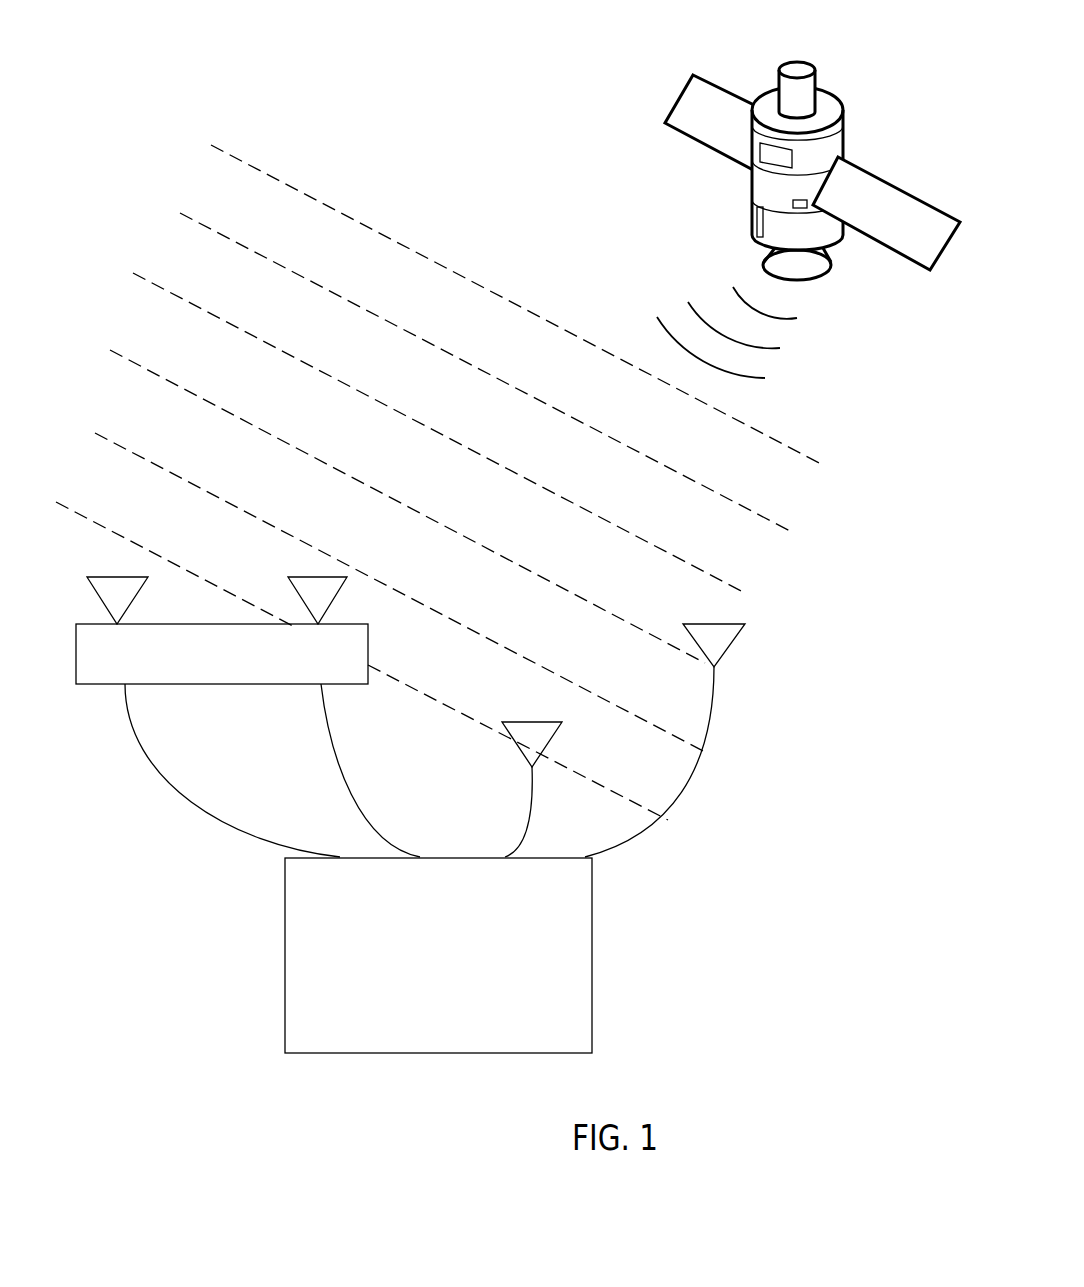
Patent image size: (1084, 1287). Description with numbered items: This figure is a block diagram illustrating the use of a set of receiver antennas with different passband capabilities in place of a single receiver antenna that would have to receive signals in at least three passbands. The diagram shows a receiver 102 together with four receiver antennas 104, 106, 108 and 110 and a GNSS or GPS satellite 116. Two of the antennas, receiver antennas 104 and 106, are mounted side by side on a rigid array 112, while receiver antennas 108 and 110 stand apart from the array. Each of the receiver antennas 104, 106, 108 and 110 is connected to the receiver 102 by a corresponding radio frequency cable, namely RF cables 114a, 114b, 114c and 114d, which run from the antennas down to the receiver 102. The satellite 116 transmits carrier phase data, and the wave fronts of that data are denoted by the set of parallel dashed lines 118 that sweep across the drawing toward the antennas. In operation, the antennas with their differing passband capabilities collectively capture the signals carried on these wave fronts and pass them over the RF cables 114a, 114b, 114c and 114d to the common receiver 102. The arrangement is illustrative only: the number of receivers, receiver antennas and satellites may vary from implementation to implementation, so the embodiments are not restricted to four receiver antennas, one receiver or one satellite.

The receiver 102 is at (592, 927).
The receiver antenna 104 is at (105, 574).
The receiver antenna 106 is at (302, 574).
The receiver antenna 108 is at (515, 722).
The receiver antenna 110 is at (697, 625).
The rigid array 112 is at (370, 642).
The radio frequency (RF) cable 114a is at (165, 763).
The radio frequency (RF) cable 114b is at (333, 751).
The radio frequency (RF) cable 114c is at (528, 798).
The radio frequency (RF) cable 114d is at (685, 778).
The GNSS or GPS satellite 116 is at (693, 77).
The dashed lines 118 is at (170, 180).